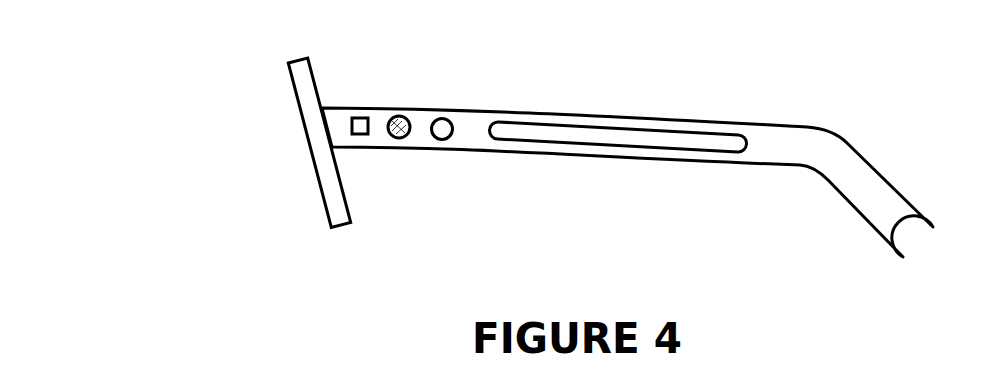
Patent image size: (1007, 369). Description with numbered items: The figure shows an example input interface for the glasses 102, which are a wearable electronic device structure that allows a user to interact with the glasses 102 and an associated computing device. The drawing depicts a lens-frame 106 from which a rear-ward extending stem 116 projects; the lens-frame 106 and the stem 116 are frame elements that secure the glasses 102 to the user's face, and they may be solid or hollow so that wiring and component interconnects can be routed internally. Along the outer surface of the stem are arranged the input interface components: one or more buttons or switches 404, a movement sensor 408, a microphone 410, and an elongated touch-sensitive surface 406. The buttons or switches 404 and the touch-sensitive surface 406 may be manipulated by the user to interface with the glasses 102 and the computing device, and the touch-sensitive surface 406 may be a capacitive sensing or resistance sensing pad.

The glasses 102 is at (294, 95).
The lens-frame 106 is at (342, 227).
The stem 116 is at (910, 237).
The buttons or switches 404 is at (443, 140).
The touch-sensitive surface 406 is at (608, 143).
The movement sensor 408 is at (357, 118).
The microphone 410 is at (399, 139).